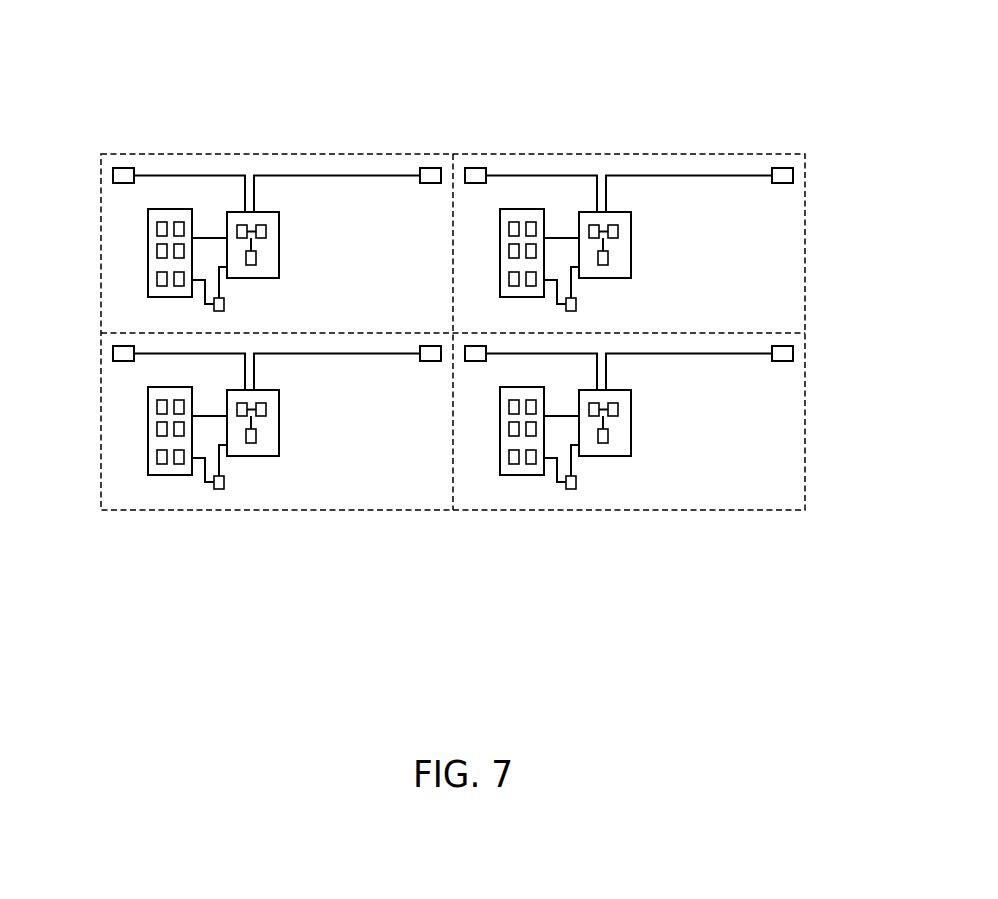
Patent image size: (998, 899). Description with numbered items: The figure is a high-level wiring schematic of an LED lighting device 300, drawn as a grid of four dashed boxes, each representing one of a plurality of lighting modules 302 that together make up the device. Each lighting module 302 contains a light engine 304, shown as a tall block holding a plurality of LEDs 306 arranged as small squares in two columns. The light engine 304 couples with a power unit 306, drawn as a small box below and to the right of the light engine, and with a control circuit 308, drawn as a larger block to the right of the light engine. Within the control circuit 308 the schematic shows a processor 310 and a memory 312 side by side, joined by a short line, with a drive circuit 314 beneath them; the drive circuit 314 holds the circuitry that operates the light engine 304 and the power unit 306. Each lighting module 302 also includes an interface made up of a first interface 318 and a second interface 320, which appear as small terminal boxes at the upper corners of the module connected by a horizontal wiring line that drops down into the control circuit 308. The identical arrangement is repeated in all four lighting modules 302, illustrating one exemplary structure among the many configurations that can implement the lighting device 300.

The LED lighting device 300 is at (886, 74).
The lighting module 302 is at (285, 140).
The light engine 304 is at (148, 266).
The LEDs / power unit 306 is at (148, 228).
The control circuit 308 is at (282, 232).
The processor 310 is at (242, 224).
The memory 312 is at (260, 224).
The drive circuit 314 is at (252, 265).
The first interface 318 is at (430, 156).
The second interface 320 is at (123, 157).